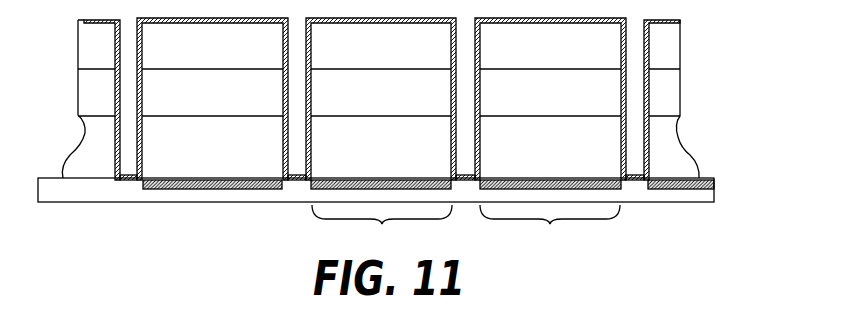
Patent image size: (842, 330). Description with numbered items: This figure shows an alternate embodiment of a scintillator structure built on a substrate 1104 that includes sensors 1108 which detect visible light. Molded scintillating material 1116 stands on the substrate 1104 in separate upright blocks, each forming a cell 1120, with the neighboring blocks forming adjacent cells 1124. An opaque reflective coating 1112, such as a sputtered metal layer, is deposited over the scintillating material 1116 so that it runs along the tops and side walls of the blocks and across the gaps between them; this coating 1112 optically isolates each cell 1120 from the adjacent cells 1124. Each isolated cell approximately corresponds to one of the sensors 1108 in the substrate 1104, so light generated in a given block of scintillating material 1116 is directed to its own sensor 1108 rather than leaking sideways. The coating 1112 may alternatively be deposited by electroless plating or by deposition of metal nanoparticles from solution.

The substrate 1104 is at (713, 196).
The sensors 1108 is at (713, 183).
The opaque reflective coating 1112 is at (647, 50).
The scintillating material 1116 is at (667, 90).
The cell 1120 is at (550, 230).
The adjacent cells 1124 is at (382, 230).